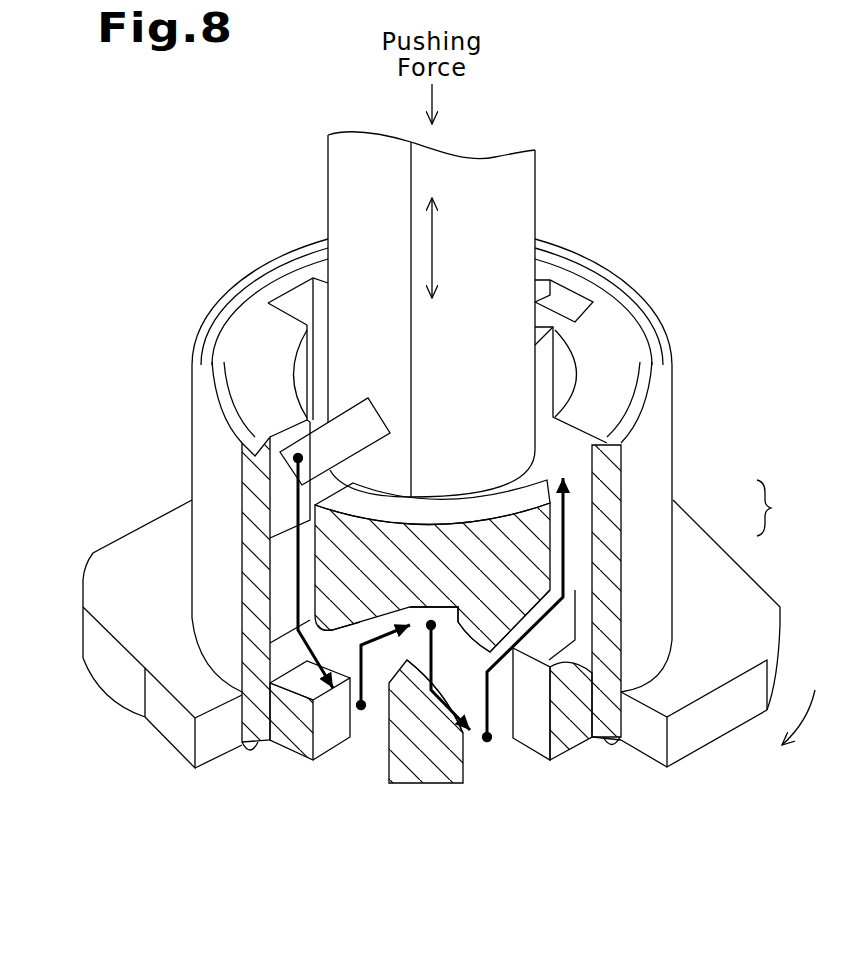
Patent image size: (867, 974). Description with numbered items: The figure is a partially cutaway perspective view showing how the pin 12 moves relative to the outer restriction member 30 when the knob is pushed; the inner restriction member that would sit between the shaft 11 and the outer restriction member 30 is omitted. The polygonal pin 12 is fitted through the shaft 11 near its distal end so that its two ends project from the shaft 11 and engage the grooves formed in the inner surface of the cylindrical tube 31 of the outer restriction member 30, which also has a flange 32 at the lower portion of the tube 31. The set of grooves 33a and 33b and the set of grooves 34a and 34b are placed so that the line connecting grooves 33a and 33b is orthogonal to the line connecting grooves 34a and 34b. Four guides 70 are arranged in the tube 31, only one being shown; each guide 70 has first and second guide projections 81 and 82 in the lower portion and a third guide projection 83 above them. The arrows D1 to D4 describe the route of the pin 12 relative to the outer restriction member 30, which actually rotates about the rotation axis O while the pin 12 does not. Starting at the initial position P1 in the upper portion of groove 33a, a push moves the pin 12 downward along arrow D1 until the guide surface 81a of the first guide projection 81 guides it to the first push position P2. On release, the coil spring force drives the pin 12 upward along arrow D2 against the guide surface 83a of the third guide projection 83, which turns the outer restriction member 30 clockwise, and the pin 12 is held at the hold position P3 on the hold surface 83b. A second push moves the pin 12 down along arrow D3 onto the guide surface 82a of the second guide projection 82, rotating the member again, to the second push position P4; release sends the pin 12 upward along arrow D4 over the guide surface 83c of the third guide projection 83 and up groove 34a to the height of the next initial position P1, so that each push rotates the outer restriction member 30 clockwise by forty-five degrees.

The shaft 11 is at (535, 183).
The pin 12 is at (358, 412).
The outer restriction member 30 is at (500, 494).
The tube 31 is at (670, 462).
The flange 32 is at (672, 500).
The groove 33a is at (293, 432).
The groove 33b is at (577, 302).
The groove 34a is at (580, 440).
The groove 34b is at (297, 292).
The guide 70 is at (353, 792).
The first guide projection 81 is at (305, 750).
The guide surface 81a is at (300, 694).
The second guide projection 82 is at (407, 778).
The guide surface 82a is at (410, 682).
The third guide projection 83 is at (460, 505).
The guide surface 83a is at (362, 632).
The hold surface 83b is at (434, 603).
The guide surface 83c is at (520, 608).
The initial position P1 is at (306, 450).
The first push position P2 is at (366, 712).
The hold position P3 is at (434, 633).
The second push position P4 is at (494, 745).
The arrow D1 is at (297, 567).
The arrow D2 is at (385, 612).
The arrow D3 is at (473, 712).
The arrow D4 is at (567, 540).
The rotation axis O is at (436, 250).